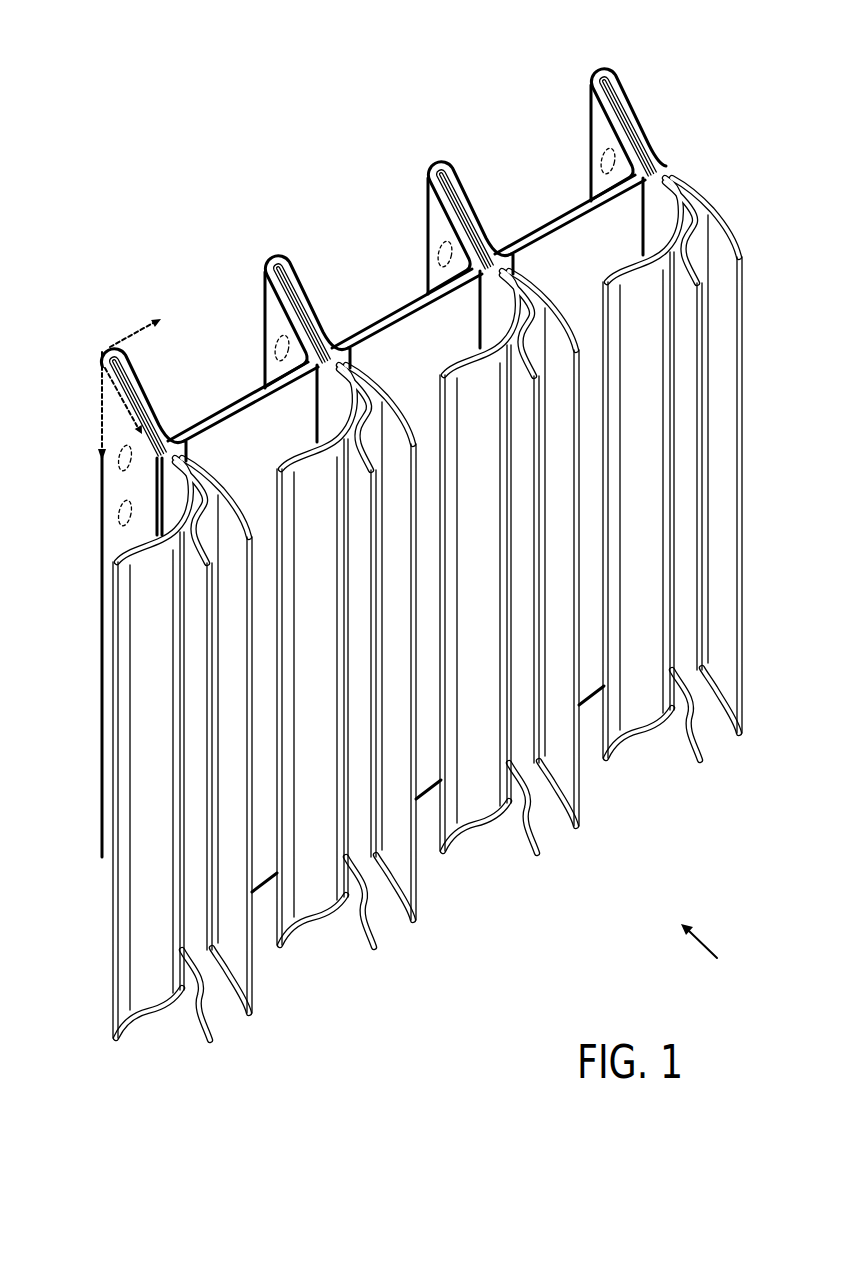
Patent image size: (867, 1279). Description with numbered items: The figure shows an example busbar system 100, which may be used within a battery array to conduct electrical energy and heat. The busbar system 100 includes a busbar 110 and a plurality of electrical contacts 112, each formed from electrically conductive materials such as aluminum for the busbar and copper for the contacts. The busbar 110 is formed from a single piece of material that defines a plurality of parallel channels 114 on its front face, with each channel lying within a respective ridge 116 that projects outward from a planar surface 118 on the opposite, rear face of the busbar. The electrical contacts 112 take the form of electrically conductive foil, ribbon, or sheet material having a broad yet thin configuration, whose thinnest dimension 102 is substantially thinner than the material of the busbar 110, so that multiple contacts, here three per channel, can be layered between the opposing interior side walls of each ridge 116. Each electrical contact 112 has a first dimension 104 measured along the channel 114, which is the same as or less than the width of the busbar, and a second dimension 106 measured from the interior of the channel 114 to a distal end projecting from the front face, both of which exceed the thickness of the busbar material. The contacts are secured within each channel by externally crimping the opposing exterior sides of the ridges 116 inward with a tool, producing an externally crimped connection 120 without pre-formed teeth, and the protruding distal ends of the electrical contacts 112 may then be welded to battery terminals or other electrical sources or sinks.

The busbar system 100 is at (717, 956).
The thinnest dimension 102 is at (130, 333).
The first dimension 104 is at (97, 435).
The second dimension 106 is at (115, 385).
The busbar 110 is at (628, 223).
The electrical contacts 112 is at (439, 658).
The parallel channels 114 is at (618, 98).
The ridges 116 is at (598, 82).
The planar surface 118 is at (572, 220).
The externally crimped connection 120 is at (123, 467).